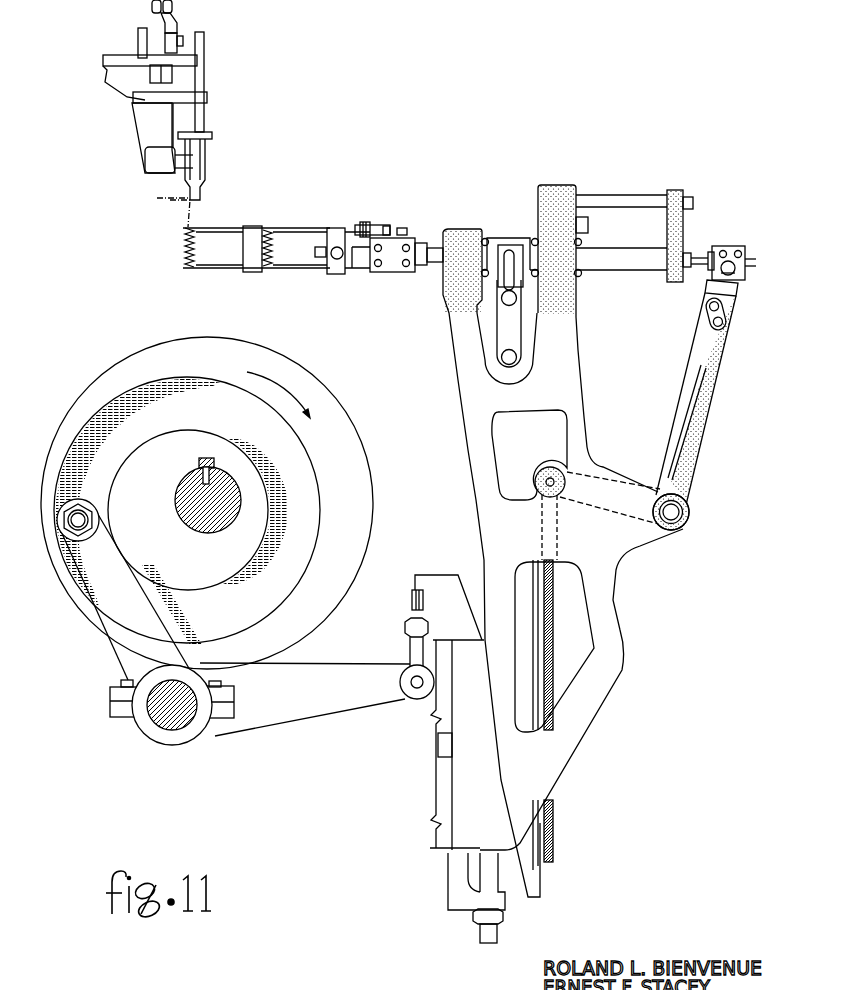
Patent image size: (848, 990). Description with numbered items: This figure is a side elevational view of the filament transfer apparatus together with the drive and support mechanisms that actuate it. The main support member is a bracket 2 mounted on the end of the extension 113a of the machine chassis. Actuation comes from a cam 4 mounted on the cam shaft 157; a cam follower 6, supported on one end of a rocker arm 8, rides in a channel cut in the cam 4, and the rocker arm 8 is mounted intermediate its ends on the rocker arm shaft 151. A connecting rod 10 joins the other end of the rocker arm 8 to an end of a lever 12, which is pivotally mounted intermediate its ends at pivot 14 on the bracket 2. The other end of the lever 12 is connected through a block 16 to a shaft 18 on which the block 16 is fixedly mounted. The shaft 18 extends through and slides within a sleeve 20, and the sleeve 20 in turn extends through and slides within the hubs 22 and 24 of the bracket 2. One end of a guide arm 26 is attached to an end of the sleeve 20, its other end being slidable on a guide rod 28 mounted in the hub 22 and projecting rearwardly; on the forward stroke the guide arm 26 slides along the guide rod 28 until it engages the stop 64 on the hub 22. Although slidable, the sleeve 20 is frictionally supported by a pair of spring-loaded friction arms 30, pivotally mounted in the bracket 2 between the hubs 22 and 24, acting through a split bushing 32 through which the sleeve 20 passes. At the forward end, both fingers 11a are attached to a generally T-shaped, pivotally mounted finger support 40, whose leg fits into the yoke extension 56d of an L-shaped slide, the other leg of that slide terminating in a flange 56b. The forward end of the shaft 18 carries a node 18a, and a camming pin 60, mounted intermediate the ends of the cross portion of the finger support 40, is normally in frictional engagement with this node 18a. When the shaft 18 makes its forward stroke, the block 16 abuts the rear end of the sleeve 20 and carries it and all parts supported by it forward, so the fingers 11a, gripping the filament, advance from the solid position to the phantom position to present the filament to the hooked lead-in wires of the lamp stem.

The bracket 2 is at (613, 593).
The cam 4 is at (362, 546).
The cam follower 6 is at (57, 520).
The rocker arm 8 is at (122, 655).
The connecting rod 10 is at (409, 600).
The fingers 11a is at (220, 227).
The lever 12 is at (724, 353).
The pivot 14 is at (678, 511).
The block 16 is at (733, 246).
The shaft 18 is at (751, 267).
The node 18a is at (319, 253).
The sleeve 20 is at (625, 268).
The hub 22 is at (578, 194).
The hub 24 is at (462, 231).
The guide arm 26 is at (681, 225).
The guide rod 28 is at (620, 197).
The friction arms 30 is at (497, 329).
The split bushing 32 is at (512, 240).
The T-shaped finger support 40 is at (356, 262).
The flange 56b is at (422, 267).
The yoke extension 56d is at (372, 268).
The camming pin 60 is at (338, 274).
The stop 64 is at (589, 224).
The extension 113a is at (431, 849).
The rocker arm shaft 151 is at (168, 728).
The cam shaft 157 is at (189, 527).